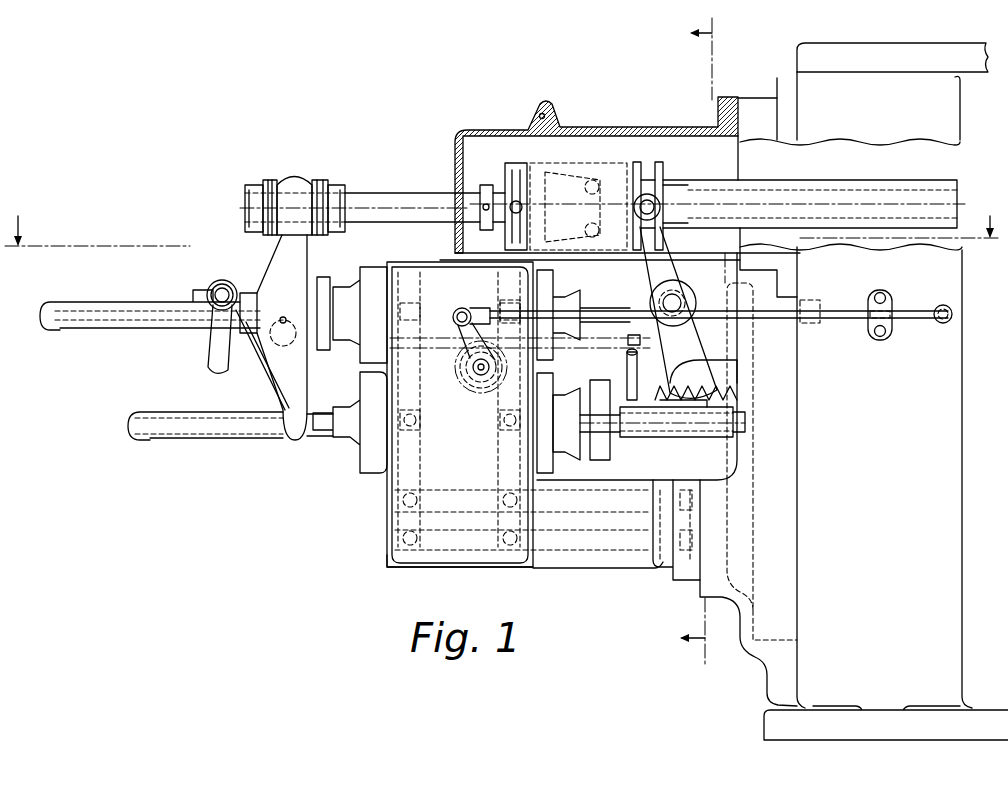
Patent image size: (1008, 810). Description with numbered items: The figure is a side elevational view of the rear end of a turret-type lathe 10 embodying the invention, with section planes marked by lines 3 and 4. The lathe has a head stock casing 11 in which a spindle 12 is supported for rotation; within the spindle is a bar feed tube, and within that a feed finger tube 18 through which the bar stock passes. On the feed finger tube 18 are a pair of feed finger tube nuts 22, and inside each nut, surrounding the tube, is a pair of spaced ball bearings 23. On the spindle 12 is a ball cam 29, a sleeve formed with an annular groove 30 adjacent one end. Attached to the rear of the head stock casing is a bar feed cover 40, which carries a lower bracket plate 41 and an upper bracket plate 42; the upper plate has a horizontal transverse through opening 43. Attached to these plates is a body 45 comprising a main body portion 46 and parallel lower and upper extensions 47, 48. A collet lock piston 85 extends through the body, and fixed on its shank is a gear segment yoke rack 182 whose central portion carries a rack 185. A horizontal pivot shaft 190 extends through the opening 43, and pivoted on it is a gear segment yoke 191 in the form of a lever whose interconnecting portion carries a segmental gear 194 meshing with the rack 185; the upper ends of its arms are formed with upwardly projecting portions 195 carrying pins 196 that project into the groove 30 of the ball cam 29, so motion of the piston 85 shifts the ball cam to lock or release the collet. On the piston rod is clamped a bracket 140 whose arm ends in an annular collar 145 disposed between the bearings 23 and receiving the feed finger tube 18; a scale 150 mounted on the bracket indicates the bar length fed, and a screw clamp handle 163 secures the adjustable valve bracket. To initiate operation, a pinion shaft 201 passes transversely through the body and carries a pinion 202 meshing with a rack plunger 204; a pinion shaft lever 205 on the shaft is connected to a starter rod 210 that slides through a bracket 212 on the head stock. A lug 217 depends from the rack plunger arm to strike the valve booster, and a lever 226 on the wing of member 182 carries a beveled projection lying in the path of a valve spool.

The section line 3- 3 is at (681, 341).
The section line 4- 4 is at (502, 221).
The lathe 10 is at (658, 680).
The head stock casing 11 is at (943, 573).
The spindle 12 is at (906, 182).
The feed finger tube 18 is at (413, 197).
The feed finger tube nuts 22 is at (342, 185).
The ball bearings 23 is at (324, 180).
The ball cam 29 is at (593, 169).
The annular groove 30 is at (652, 162).
The bar feed cover 40 is at (752, 665).
The lower bracket plate 41 is at (656, 575).
The upper bracket plate 42 is at (688, 265).
The through opening 43 is at (683, 298).
The body 45 is at (398, 572).
The main body portion 46 is at (368, 490).
The lower extension 47 is at (553, 575).
The upper extension 48 is at (583, 262).
The collet lock piston 85 is at (618, 442).
The bracket 140 is at (317, 267).
The annular collar 145 is at (296, 178).
The scale 150 is at (113, 330).
The handle 163 is at (217, 374).
The gear segment yoke rack 182 is at (720, 446).
The rack 185 is at (723, 393).
The pivot shaft 190 is at (693, 297).
The gear segment yoke 191 is at (717, 351).
The segmental gear 194 is at (740, 374).
The upwardly projecting portions 195 is at (660, 202).
The pins 196 is at (645, 200).
The pinion shaft 201 is at (481, 376).
The pinion 202 is at (470, 387).
The rack plunger 204 is at (441, 355).
The pinion shaft lever 205 is at (455, 316).
The starter rod 210 is at (840, 320).
The bracket 212 is at (893, 307).
The lug 217 is at (588, 380).
The lever 226 is at (640, 340).